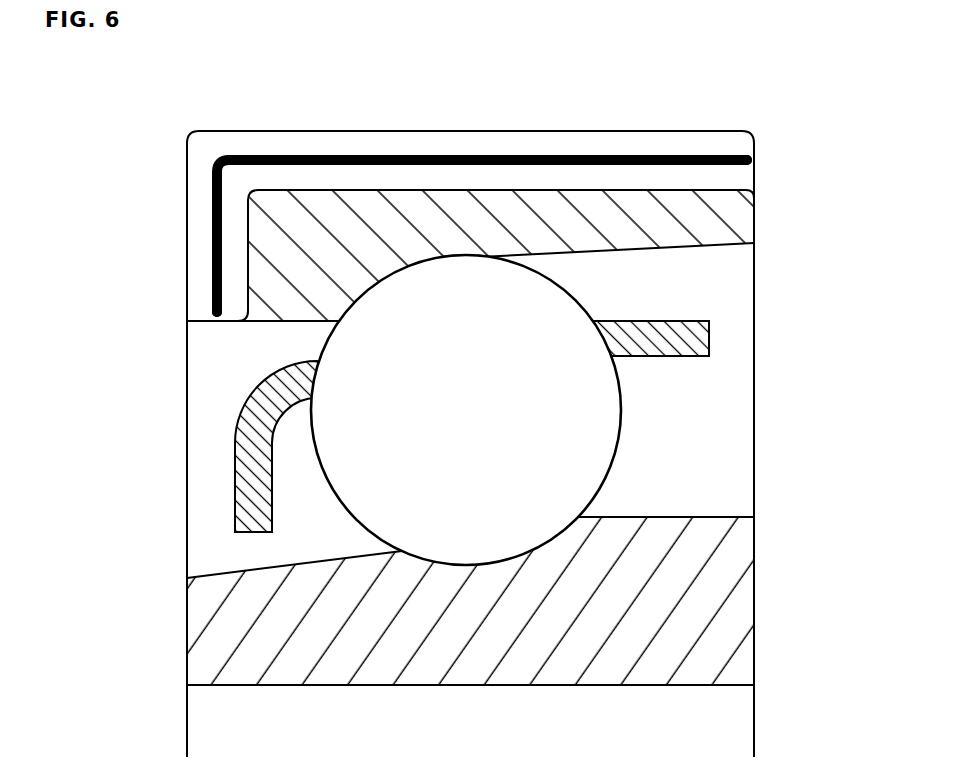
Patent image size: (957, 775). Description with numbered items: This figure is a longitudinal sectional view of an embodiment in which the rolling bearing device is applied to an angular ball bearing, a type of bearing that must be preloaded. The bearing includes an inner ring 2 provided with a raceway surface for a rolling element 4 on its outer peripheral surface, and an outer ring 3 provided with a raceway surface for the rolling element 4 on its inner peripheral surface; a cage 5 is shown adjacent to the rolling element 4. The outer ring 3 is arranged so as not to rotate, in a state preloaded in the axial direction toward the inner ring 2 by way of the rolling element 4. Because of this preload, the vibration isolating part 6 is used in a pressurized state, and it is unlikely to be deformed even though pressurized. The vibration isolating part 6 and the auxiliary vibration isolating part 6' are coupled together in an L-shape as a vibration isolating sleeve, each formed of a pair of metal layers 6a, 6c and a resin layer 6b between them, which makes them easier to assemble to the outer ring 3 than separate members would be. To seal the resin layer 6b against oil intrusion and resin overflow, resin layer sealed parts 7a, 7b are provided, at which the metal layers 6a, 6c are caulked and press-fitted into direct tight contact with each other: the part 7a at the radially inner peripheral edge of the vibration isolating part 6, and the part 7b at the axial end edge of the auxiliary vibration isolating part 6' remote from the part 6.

The inner ring 2 is at (708, 618).
The outer ring 3 is at (712, 226).
The rolling element 4 is at (588, 438).
The cage 5 is at (693, 340).
The vibration isolating part 6 is at (418, 236).
The auxiliary vibration isolating part 6' is at (488, 116).
The metal layer 6a is at (232, 279).
The resin layer 6b is at (210, 247).
The metal layer 6c is at (197, 210).
The resin layer sealed part 7a is at (177, 320).
The resin layer sealed part 7b is at (752, 125).